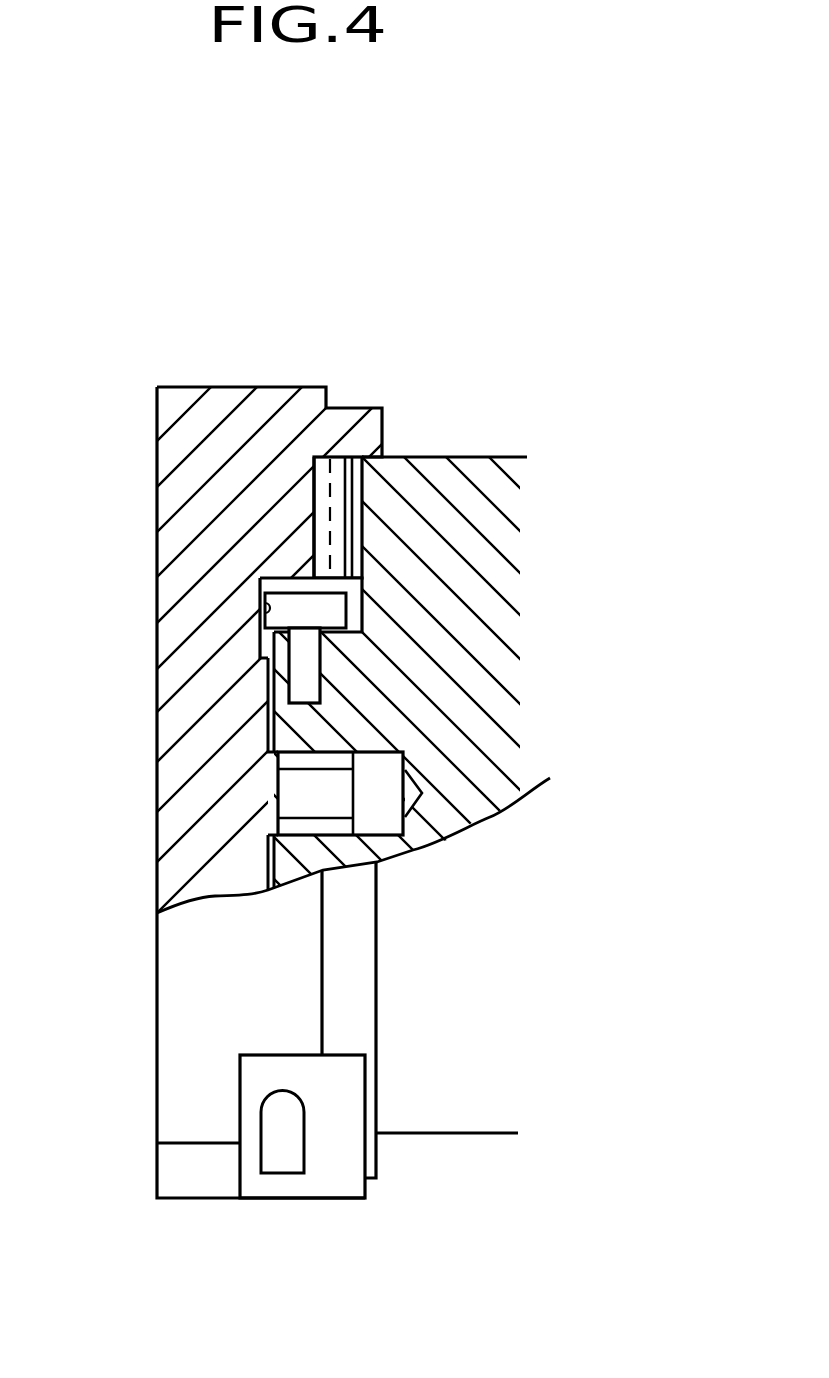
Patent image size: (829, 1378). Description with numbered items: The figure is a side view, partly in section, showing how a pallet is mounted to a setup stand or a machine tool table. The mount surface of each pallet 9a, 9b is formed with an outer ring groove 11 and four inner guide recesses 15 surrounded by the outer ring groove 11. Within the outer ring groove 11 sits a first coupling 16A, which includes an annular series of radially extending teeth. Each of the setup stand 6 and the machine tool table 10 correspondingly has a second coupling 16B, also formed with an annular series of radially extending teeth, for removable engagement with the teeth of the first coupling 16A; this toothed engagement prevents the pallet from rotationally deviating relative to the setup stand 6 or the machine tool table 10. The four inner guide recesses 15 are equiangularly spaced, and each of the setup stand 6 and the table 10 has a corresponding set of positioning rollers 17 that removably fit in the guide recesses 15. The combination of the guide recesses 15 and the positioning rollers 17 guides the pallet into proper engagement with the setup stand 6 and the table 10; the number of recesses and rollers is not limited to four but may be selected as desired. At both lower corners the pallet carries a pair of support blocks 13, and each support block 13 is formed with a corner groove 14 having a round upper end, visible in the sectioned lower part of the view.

The pallet 9a is at (387, 725).
The pallet 9b is at (174, 387).
The setup stand 6 is at (400, 707).
The machine tool table 10 is at (465, 457).
The outer ring groove 11 is at (313, 509).
The support block 13 is at (339, 1170).
The corner groove 14 is at (273, 1157).
The inner guide recess 15 is at (266, 608).
The first coupling 16A is at (325, 457).
The second coupling 16B is at (352, 457).
The positioning roller 17 is at (297, 618).